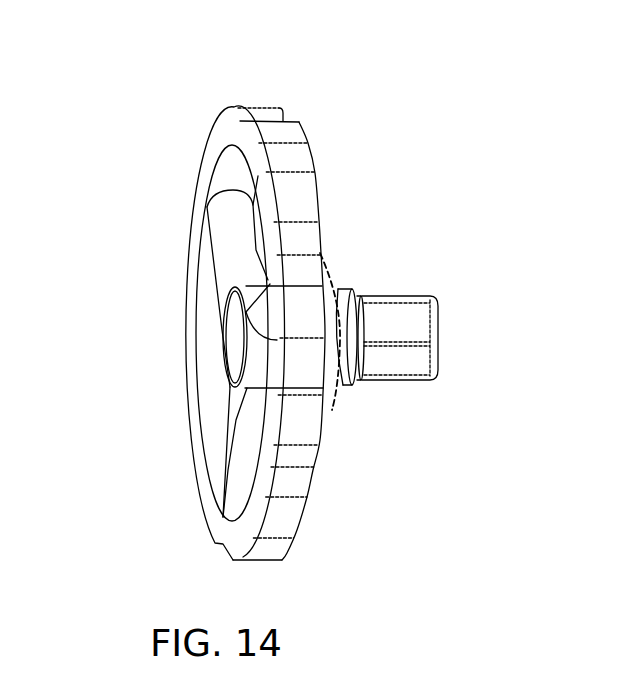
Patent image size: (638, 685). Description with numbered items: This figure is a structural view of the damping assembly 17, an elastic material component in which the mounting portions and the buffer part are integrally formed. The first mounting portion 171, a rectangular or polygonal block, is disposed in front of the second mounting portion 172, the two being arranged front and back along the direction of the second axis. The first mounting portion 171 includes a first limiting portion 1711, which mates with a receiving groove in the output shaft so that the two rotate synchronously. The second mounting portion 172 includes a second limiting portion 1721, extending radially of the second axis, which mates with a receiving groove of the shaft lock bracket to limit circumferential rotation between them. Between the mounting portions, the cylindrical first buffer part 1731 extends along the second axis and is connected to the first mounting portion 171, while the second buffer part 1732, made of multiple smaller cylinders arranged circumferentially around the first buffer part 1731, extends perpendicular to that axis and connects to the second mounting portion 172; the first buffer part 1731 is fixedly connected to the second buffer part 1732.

The damping assembly 17 is at (195, 172).
The second limiting portion 1721 is at (228, 107).
The second mounting portion 172 is at (188, 303).
The second buffer part 1732 is at (245, 452).
The first mounting portion 171 is at (390, 295).
The first buffer part 1731 is at (347, 368).
The first limiting portion 1711 is at (412, 368).